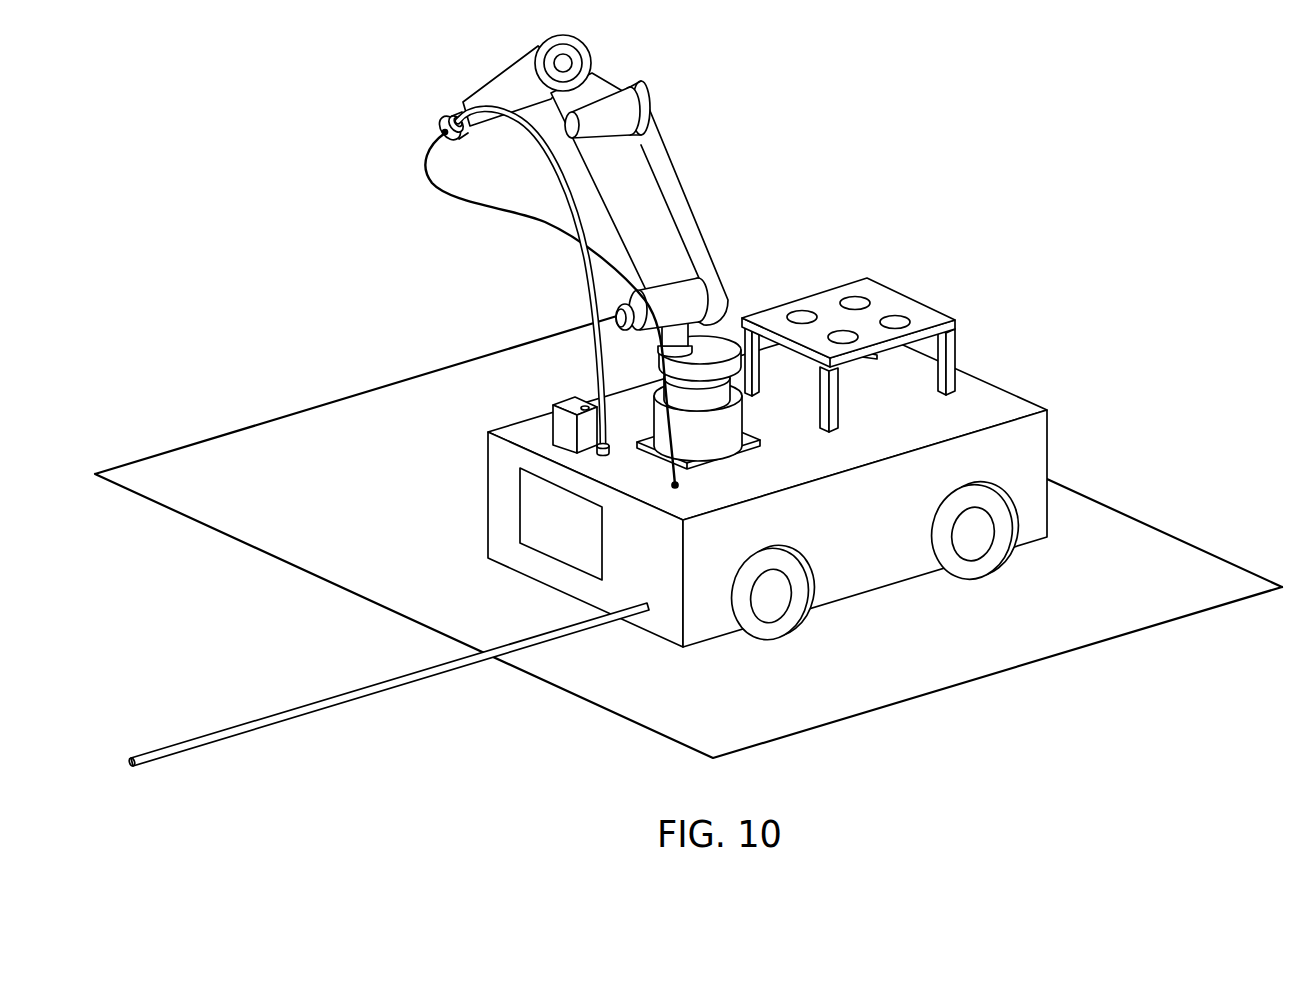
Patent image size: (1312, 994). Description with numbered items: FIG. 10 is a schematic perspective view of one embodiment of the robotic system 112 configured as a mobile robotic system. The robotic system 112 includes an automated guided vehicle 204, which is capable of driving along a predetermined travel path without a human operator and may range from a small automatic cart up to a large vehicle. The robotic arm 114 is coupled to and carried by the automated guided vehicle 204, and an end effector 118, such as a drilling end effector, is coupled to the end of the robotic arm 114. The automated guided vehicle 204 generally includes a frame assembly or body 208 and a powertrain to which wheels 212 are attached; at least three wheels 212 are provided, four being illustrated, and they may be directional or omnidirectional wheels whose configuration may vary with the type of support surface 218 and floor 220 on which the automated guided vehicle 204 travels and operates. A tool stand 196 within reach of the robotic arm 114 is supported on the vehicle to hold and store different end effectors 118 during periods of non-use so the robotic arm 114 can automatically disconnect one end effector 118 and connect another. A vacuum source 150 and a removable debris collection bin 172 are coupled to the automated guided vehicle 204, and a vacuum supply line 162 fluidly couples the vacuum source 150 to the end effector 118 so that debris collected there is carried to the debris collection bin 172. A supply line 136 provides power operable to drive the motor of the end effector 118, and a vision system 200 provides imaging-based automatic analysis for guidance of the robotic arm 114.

The robotic system 112 is at (493, 182).
The robotic arm 114 is at (688, 186).
The end effector 118 is at (442, 125).
The supply line 136 is at (499, 215).
The vacuum source 150 is at (565, 402).
The vacuum supply line 162 is at (584, 276).
The debris collection bin 172 is at (552, 543).
The tool stand 196 is at (936, 312).
The vision system 200 is at (403, 438).
The automated guided vehicle 204 is at (797, 456).
The frame assembly 208 is at (1054, 446).
The wheels 212 is at (996, 562).
The support surface 218 is at (1165, 553).
The floor 220 is at (1245, 572).